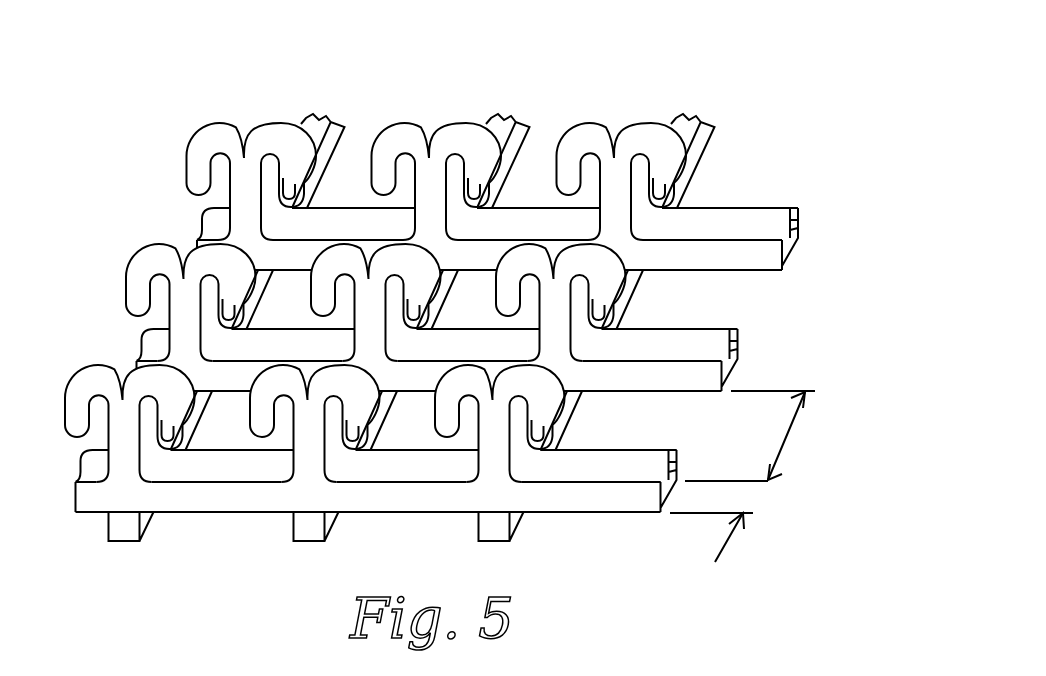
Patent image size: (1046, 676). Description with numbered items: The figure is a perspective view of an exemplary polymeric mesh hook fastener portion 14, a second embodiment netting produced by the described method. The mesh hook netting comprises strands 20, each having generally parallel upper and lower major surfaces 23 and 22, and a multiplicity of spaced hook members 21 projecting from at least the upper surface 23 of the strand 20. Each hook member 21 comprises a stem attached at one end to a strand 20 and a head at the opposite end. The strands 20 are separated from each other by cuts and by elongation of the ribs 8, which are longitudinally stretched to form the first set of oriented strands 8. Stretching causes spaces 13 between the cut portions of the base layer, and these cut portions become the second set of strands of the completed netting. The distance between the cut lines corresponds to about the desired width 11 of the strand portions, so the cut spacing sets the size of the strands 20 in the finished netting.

The polymeric mesh hook fastener portion 14 is at (440, 325).
The hook member 21 is at (626, 154).
The strand 20 is at (506, 204).
The oriented strands 8 is at (581, 421).
The spaces 13 is at (790, 437).
The upper major surface 23 is at (599, 516).
The lower major surface 22 is at (376, 527).
The width of the strand portions 11 is at (722, 552).